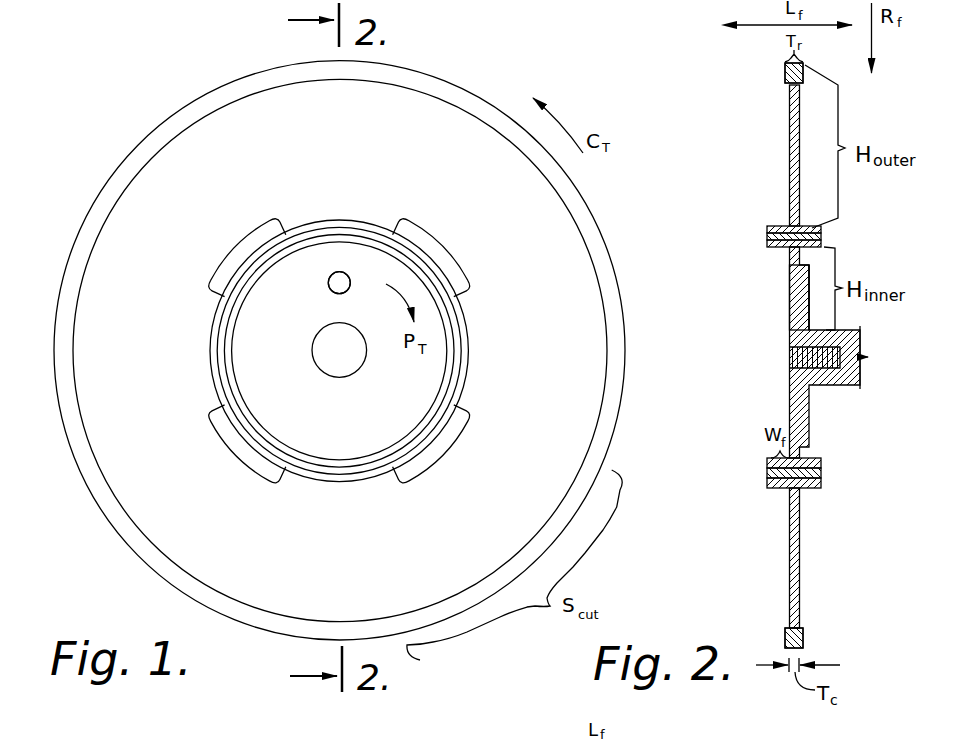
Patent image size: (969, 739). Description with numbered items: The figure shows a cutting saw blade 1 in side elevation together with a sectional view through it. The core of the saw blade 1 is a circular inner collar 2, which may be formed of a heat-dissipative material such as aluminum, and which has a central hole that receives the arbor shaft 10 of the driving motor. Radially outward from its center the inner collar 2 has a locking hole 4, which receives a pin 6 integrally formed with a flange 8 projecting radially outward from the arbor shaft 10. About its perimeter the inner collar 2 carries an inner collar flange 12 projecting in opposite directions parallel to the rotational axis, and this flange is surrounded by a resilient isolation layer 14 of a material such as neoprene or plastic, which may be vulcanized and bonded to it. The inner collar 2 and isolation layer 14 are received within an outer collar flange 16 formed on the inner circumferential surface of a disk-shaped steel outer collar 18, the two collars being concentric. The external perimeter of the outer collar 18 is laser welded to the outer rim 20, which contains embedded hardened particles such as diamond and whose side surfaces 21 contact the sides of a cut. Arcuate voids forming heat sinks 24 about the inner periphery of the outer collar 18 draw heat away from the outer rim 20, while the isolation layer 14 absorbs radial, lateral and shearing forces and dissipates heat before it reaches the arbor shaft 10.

In FIG. 1, the saw blade 1 is at (325, 345).
In FIG. 1, the inner collar 2 is at (236, 349).
In FIG. 2, the inner collar 2 is at (788, 268).
In FIG. 1, the locking hole 4 is at (328, 283).
In FIG. 1, the pin 6 is at (341, 275).
In FIG. 2, the pin 6 is at (793, 290).
In FIG. 2, the flange 8 is at (806, 318).
In FIG. 1, the arbor shaft 10 is at (322, 350).
In FIG. 2, the arbor shaft 10 is at (827, 384).
In FIG. 1, the inner collar flange 12 is at (240, 407).
In FIG. 2, the inner collar flange 12 is at (778, 247).
In FIG. 1, the isolation layer 14 is at (227, 388).
In FIG. 2, the isolation layer 14 is at (768, 237).
In FIG. 1, the outer collar flange 16 is at (213, 376).
In FIG. 2, the outer collar flange 16 is at (775, 227).
In FIG. 1, the outer collar 18 is at (108, 275).
In FIG. 2, the outer collar 18 is at (790, 152).
In FIG. 1, the outer rim 20 is at (107, 205).
In FIG. 2, the outer rim 20 is at (762, 62).
In FIG. 2, the side surfaces 21 is at (785, 77).
In FIG. 1, the heat sinks 24 is at (241, 260).